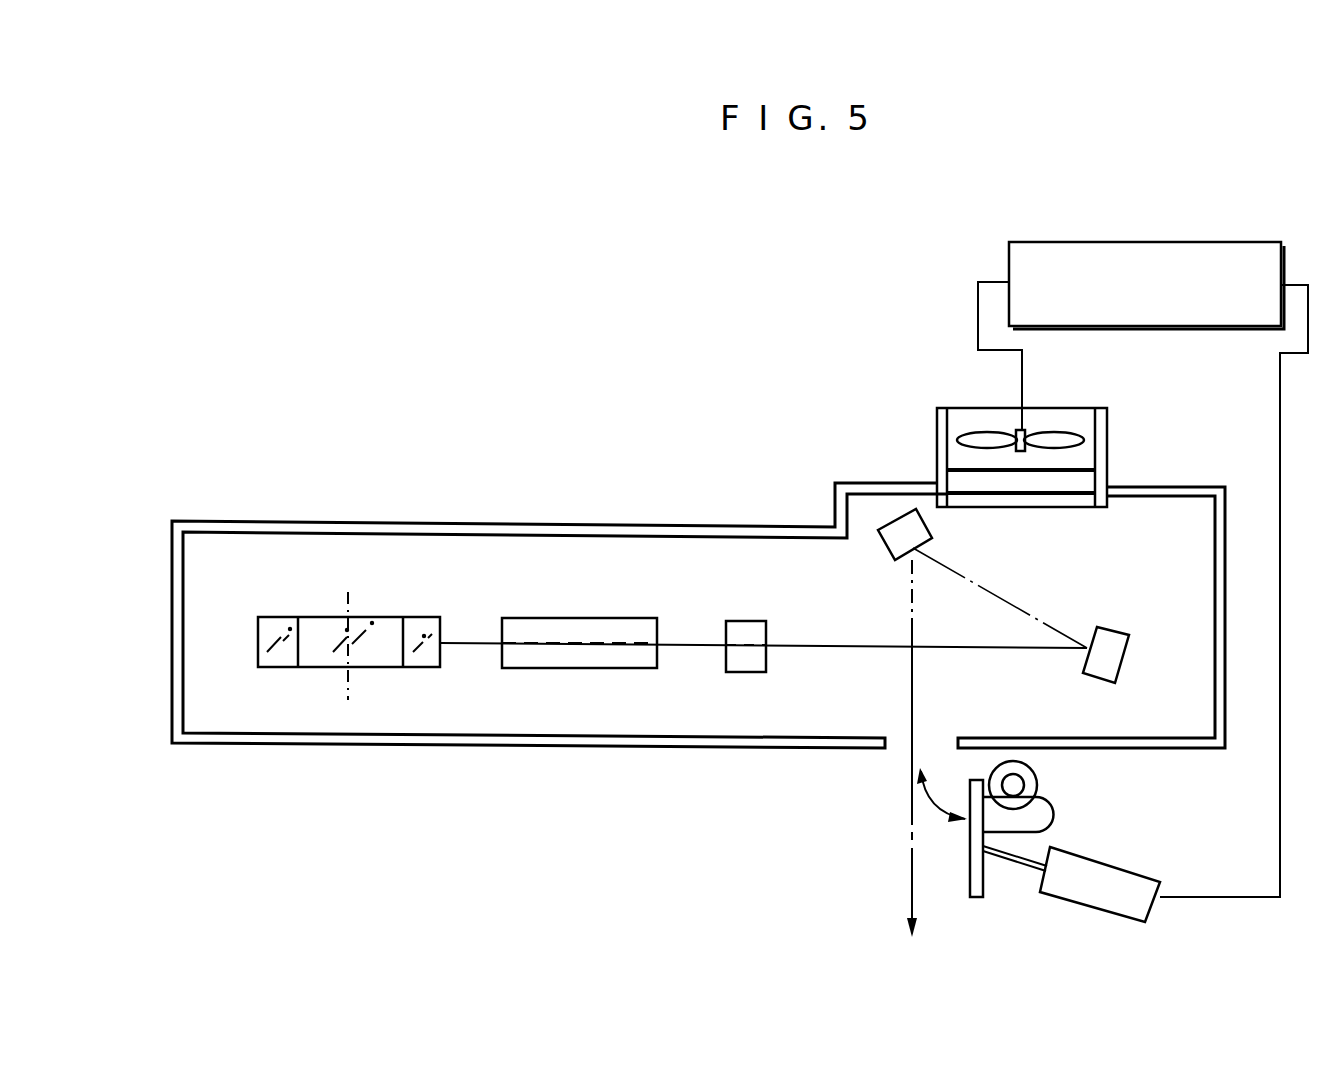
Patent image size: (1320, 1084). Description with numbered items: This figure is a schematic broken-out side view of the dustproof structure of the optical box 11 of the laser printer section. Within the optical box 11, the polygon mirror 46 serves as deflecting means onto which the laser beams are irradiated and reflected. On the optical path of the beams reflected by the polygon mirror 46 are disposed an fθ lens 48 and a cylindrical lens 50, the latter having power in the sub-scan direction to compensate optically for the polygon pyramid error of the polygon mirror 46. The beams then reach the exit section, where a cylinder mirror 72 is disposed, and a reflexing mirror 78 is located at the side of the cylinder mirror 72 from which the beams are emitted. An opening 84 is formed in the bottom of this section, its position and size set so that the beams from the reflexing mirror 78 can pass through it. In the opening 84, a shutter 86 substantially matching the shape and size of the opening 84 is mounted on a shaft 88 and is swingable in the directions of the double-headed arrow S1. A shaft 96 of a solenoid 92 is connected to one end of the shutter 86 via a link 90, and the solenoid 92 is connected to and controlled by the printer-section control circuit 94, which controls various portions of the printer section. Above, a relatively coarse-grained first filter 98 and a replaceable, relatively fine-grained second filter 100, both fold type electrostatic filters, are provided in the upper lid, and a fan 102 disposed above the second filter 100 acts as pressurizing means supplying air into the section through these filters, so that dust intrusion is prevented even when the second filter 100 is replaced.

The optical box 11 is at (670, 527).
The polygon mirror 46 is at (377, 667).
The fθ lens 48 is at (558, 669).
The cylindrical lens 50 is at (747, 673).
The cylinder mirror 72 is at (1128, 658).
The reflexing mirror 78 is at (931, 523).
The opening 84 is at (887, 745).
The shutter 86 is at (961, 864).
The shaft 88 is at (1013, 783).
The link 90 is at (994, 864).
The solenoid 92 is at (1106, 908).
The printer-section control circuit 94 is at (1153, 242).
The shaft 96 is at (1023, 874).
The first filter 98 is at (1086, 502).
The second filter 100 is at (1105, 483).
The fan 102 is at (1072, 437).
The double-headed arrow S1 is at (933, 803).